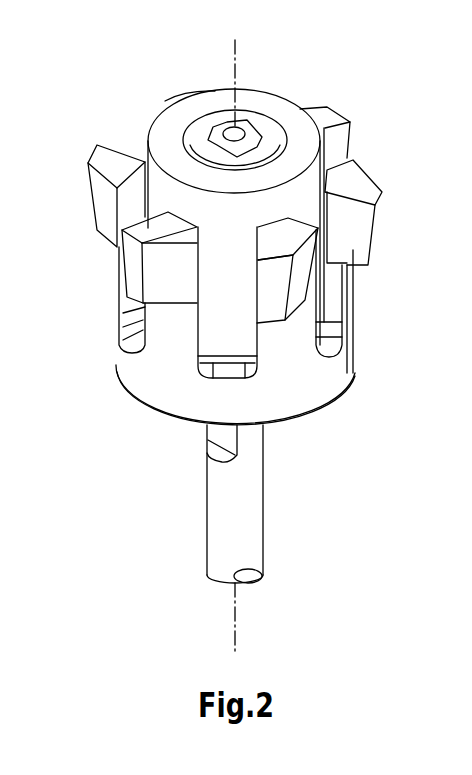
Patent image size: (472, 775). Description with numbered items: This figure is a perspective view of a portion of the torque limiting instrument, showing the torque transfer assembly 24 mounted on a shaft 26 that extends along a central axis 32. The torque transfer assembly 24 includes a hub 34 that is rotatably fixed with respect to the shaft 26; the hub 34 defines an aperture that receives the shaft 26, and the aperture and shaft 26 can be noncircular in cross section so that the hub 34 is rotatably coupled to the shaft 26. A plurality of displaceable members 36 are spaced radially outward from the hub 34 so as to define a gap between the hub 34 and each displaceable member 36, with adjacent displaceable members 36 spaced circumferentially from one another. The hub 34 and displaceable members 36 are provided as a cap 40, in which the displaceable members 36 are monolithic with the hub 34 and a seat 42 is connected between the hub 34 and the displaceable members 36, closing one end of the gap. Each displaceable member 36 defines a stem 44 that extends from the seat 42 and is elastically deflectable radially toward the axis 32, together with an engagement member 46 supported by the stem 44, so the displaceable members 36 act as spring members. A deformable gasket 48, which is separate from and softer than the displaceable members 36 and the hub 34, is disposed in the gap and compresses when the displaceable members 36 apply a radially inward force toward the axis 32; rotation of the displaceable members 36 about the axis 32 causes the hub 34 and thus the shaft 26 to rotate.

The torque transfer assembly 24 is at (230, 271).
The shaft 26 is at (235, 522).
The axis 32 is at (235, 630).
The hub 34 is at (270, 133).
The displaceable member 36 is at (377, 237).
The cap 40 is at (92, 152).
The seat 42 is at (290, 420).
The stem 44 is at (172, 342).
The engagement member 46 is at (168, 262).
The deformable gasket 48 is at (240, 315).